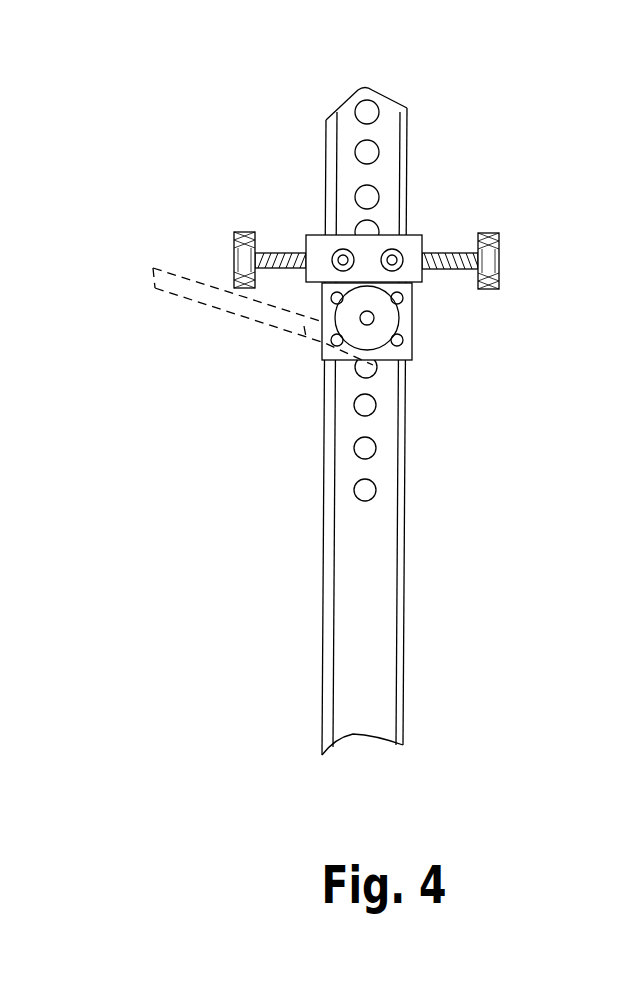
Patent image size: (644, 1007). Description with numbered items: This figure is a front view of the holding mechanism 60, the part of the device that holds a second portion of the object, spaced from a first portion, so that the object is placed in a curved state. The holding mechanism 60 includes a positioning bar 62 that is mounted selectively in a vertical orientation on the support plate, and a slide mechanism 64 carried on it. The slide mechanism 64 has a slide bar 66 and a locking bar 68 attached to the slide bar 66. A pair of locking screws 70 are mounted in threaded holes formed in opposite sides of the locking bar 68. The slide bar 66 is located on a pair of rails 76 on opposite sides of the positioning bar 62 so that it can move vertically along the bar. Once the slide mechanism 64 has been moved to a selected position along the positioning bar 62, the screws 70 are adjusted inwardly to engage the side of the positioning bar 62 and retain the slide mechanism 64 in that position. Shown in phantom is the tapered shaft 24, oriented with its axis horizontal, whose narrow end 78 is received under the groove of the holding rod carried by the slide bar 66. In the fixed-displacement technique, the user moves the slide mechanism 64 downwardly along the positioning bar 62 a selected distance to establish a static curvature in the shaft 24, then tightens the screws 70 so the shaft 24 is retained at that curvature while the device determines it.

The holding mechanism 60 is at (353, 397).
The positioning bar 62 is at (368, 560).
The slide mechanism 64 is at (353, 164).
The slide bar 66 is at (402, 353).
The locking bar 68 is at (313, 235).
The locking screws 70 is at (238, 260).
The rails 76 is at (325, 468).
The shaft 24 is at (203, 303).
The narrow end 78 is at (295, 347).